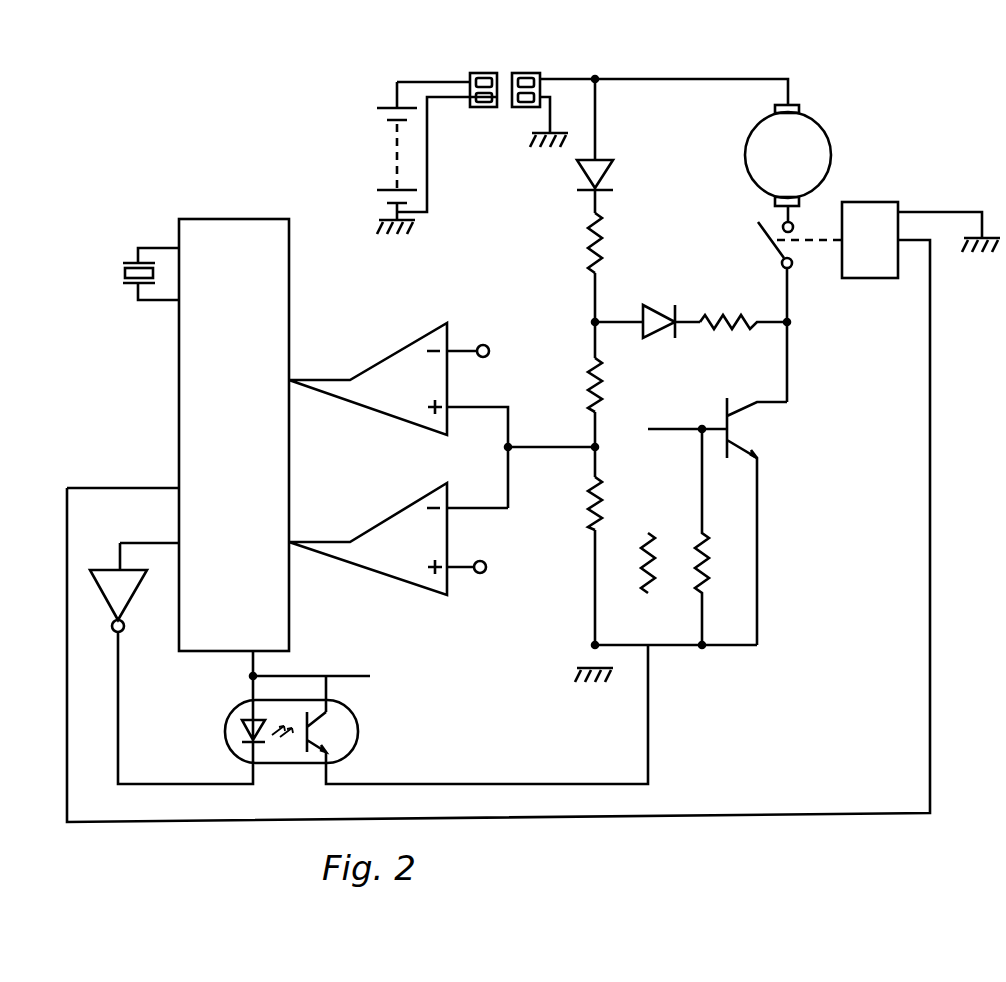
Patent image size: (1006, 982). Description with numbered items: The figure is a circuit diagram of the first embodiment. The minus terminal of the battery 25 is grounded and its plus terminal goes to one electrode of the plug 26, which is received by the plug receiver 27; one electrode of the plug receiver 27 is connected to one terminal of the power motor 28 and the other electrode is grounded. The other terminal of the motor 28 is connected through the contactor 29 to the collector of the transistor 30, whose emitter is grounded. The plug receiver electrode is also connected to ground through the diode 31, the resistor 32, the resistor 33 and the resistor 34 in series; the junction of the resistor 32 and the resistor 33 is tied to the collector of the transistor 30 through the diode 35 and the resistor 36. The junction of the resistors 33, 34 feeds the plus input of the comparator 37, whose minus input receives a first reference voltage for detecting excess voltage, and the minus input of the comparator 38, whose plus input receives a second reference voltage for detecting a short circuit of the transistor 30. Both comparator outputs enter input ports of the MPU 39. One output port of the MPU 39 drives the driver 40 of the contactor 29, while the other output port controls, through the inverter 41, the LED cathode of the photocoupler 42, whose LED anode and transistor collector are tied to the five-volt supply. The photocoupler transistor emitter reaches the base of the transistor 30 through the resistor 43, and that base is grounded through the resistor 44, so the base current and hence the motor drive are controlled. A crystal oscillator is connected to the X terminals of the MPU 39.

The battery 25 is at (378, 108).
The plug 26 is at (480, 73).
The plug receiver 27 is at (528, 73).
The power motor 28 is at (812, 132).
The contactor 29 is at (758, 235).
The transistor 30 is at (738, 407).
The diode 31 is at (608, 178).
The resistor 32 is at (604, 238).
The resistor 33 is at (600, 388).
The resistor 34 is at (598, 492).
The diode 35 is at (645, 305).
The resistor 36 is at (730, 318).
The comparator 37 is at (398, 357).
The comparator 38 is at (392, 525).
The MPU 39 is at (222, 219).
The driver 40 is at (882, 202).
The inverter 41 is at (132, 592).
The photocoupler 42 is at (237, 737).
The resistor 43 is at (657, 565).
The resistor 44 is at (711, 565).